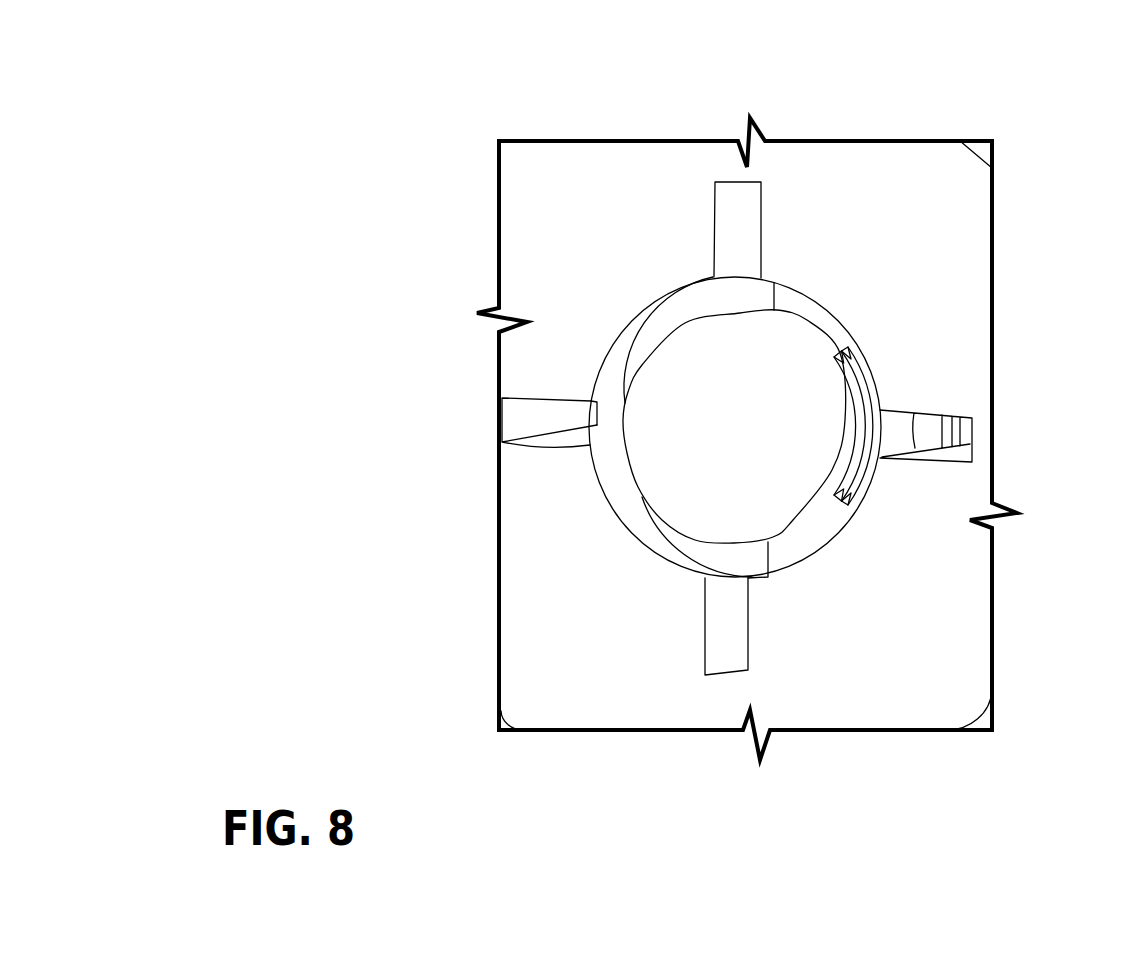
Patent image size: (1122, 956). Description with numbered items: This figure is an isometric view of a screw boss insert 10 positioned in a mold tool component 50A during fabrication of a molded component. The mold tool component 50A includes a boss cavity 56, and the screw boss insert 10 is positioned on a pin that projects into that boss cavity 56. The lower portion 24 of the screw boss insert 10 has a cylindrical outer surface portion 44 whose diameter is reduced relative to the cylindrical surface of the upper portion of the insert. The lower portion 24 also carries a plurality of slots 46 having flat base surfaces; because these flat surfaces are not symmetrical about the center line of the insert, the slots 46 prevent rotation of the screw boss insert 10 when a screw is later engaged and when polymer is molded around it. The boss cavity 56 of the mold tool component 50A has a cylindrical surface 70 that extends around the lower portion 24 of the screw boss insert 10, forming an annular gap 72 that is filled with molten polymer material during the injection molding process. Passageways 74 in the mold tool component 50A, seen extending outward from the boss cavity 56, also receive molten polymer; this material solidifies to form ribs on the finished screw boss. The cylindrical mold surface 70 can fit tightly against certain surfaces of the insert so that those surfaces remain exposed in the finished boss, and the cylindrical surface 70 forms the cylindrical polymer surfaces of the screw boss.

The screw boss insert 10 is at (743, 430).
The lower portion 24 is at (720, 495).
The cylindrical outer surface portion 44 is at (825, 340).
The slots 46 is at (870, 483).
The mold tool component 50A is at (957, 352).
The boss cavity 56 is at (795, 548).
The cylindrical surface 70 is at (650, 529).
The annular gap 72 is at (617, 480).
The passageways 74 is at (737, 220).